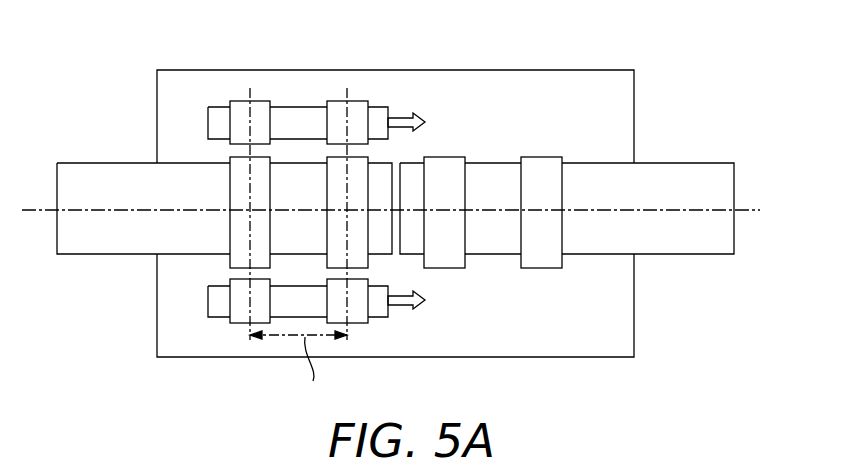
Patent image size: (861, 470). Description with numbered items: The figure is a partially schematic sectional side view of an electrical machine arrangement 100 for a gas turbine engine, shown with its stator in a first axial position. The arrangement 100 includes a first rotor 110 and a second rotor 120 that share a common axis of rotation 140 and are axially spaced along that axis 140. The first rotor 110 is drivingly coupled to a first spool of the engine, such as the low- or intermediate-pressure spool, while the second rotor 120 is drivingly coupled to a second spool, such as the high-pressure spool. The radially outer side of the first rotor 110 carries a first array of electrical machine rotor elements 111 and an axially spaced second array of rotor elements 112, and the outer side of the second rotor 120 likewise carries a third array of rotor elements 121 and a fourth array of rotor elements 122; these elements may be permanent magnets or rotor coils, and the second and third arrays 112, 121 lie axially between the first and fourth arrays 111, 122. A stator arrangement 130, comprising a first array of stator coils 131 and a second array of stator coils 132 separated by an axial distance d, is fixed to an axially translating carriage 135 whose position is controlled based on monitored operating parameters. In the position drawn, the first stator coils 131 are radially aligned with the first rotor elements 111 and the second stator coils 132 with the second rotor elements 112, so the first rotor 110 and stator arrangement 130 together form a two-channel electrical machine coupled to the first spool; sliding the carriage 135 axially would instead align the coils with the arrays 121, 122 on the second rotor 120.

The electrical machine arrangement 100 is at (617, 58).
The first rotor 110 is at (88, 163).
The first array of electrical machine rotor elements 111 is at (230, 226).
The second array of electrical machine rotor elements 112 is at (368, 173).
The second rotor 120 is at (688, 257).
The third array of electrical machine rotor elements 121 is at (444, 268).
The fourth array of electrical machine rotor elements 122 is at (540, 268).
The stator arrangement 130 is at (262, 177).
The first array of stator coils 131 is at (237, 101).
The second array of stator coils 132 is at (331, 101).
The axially translating carriage 135 is at (208, 118).
The axis of rotation 140 is at (28, 211).